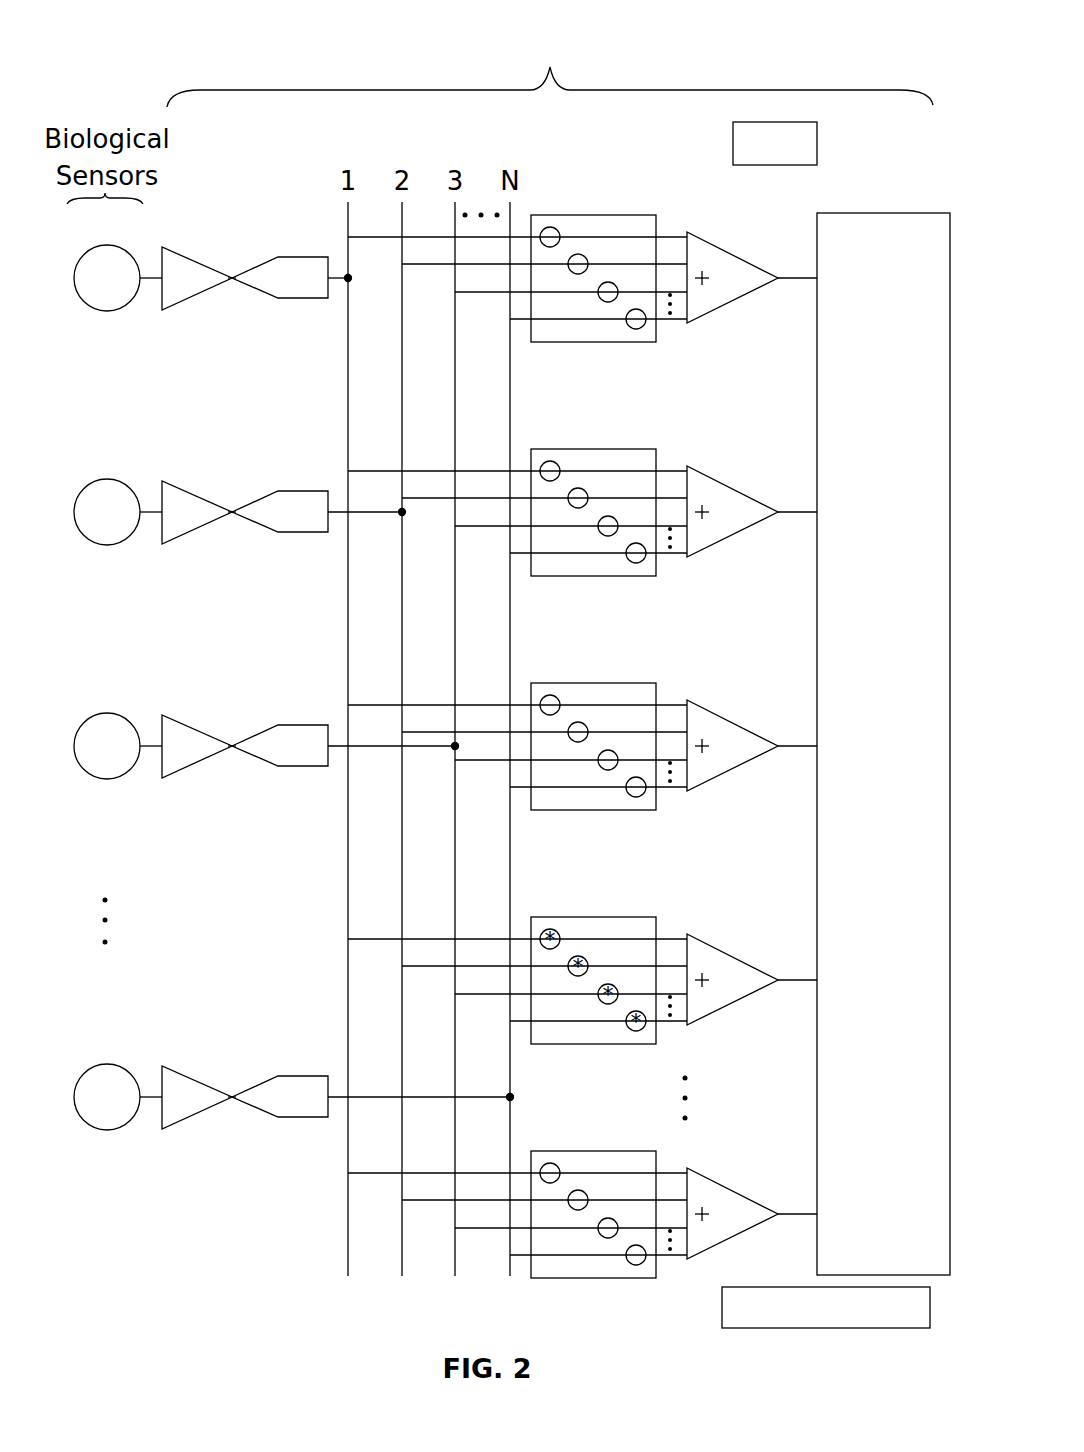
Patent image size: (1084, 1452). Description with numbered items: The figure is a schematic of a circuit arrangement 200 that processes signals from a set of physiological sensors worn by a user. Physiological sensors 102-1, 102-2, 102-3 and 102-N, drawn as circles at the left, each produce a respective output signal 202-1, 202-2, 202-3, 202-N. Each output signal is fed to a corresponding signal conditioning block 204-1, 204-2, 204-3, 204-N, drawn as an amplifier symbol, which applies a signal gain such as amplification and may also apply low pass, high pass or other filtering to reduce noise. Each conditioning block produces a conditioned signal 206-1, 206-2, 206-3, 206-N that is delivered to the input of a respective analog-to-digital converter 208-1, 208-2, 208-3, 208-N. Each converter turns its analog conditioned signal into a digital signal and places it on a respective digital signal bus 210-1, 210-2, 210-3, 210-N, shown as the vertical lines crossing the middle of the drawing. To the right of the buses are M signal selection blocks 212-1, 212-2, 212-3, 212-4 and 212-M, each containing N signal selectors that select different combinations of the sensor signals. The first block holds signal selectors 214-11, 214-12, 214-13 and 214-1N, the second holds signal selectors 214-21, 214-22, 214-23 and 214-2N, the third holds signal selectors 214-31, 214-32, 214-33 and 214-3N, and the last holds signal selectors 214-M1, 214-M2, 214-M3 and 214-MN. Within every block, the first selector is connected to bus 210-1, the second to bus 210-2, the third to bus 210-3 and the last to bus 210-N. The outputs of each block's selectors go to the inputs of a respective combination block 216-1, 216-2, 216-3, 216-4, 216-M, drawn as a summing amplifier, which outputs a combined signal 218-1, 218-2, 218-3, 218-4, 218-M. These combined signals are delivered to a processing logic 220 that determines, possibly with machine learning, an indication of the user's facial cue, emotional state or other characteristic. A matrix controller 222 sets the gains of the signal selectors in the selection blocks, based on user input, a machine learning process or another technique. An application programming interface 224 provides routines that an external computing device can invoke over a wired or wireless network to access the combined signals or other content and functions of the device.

The circuit arrangement 200 is at (550, 56).
The physiological sensor 102-1 is at (105, 311).
The physiological sensor 102-2 is at (105, 545).
The physiological sensor 102-3 is at (105, 779).
The physiological sensor 102-N is at (105, 1130).
The output signal 202-1 is at (150, 277).
The output signal 202-2 is at (150, 511).
The output signal 202-3 is at (150, 745).
The output signal 202-N is at (150, 1096).
The signal conditioning block 204-1 is at (162, 295).
The signal conditioning block 204-2 is at (162, 529).
The signal conditioning block 204-3 is at (162, 763).
The signal conditioning block 204-N is at (162, 1114).
The conditioned signal 206-1 is at (232, 277).
The conditioned signal 206-2 is at (232, 511).
The conditioned signal 206-3 is at (232, 745).
The conditioned signal 206-N is at (232, 1096).
The analog-to-digital converter 208-1 is at (307, 257).
The analog-to-digital converter 208-2 is at (307, 491).
The analog-to-digital converter 208-3 is at (307, 725).
The analog-to-digital converter 208-N is at (307, 1076).
The digital signal bus 210-1 is at (346, 1225).
The digital signal bus 210-2 is at (401, 1262).
The digital signal bus 210-3 is at (454, 1270).
The digital signal bus 210-N is at (509, 1262).
The signal selection block 212-1 is at (657, 223).
The signal selection block 212-2 is at (657, 457).
The signal selection block 212-3 is at (657, 691).
The signal selection block 212-4 is at (657, 925).
The signal selection block 212-M is at (657, 1159).
The signal selector 214-11 is at (547, 227).
The signal selector 214-12 is at (578, 253).
The signal selector 214-13 is at (608, 303).
The signal selector 214-1N is at (640, 330).
The signal selector 214-21 is at (547, 461).
The signal selector 214-22 is at (578, 487).
The signal selector 214-23 is at (608, 537).
The signal selector 214-2N is at (640, 564).
The signal selector 214-31 is at (547, 695).
The signal selector 214-32 is at (578, 721).
The signal selector 214-33 is at (608, 771).
The signal selector 214-3N is at (640, 798).
The signal selector 214-M1 is at (547, 1163).
The signal selector 214-M2 is at (578, 1189).
The signal selector 214-M3 is at (608, 1239).
The signal selector 214-MN is at (640, 1266).
The combination block 216-1 is at (718, 245).
The combination block 216-2 is at (718, 479).
The combination block 216-3 is at (718, 713).
The combination block 216-4 is at (718, 947).
The combination block 216-M is at (718, 1181).
The combined signal 218-1 is at (793, 280).
The combined signal 218-2 is at (793, 514).
The combined signal 218-3 is at (793, 748).
The combined signal 218-4 is at (793, 982).
The combined signal 218-M is at (793, 1216).
The processing logic 220 is at (885, 213).
The matrix controller 222 is at (862, 1329).
The application programming interface 224 is at (776, 122).